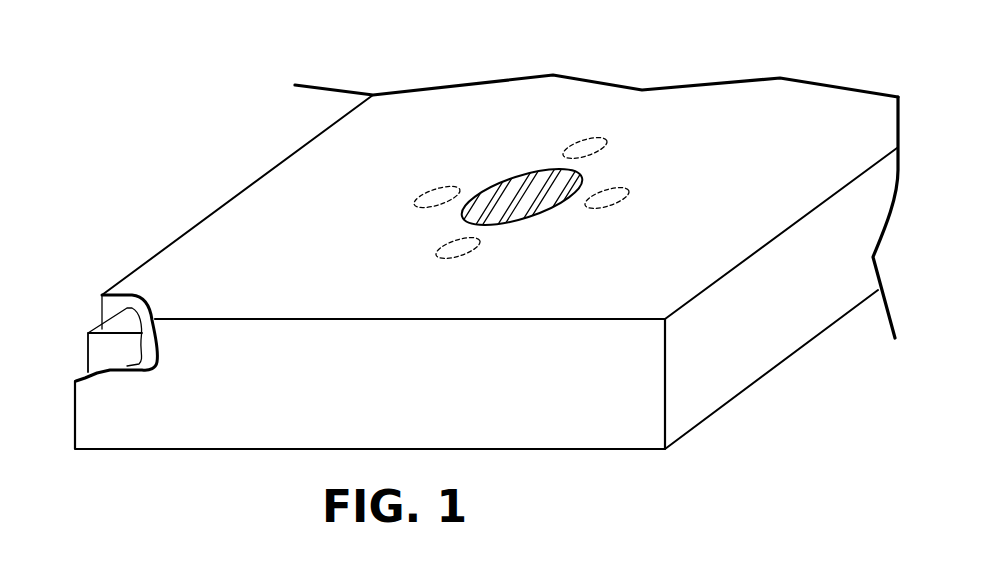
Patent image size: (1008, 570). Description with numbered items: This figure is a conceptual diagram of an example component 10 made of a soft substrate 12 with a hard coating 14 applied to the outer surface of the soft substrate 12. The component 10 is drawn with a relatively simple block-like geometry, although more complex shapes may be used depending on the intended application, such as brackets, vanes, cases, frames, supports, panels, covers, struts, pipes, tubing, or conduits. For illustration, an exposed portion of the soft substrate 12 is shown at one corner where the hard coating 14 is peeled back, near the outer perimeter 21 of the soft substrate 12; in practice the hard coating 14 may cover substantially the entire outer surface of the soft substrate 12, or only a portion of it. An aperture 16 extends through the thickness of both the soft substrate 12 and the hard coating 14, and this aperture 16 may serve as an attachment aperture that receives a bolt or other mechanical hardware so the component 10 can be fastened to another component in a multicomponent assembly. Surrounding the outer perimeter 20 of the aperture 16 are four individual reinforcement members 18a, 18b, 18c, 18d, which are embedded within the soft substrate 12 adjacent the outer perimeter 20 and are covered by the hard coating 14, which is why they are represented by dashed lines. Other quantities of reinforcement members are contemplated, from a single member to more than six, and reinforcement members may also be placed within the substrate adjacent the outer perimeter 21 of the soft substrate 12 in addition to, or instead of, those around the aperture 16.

The component 10 is at (229, 97).
The soft substrate 12 is at (115, 328).
The hard coating 14 is at (233, 268).
The aperture 16 is at (527, 188).
The reinforcement member 18a is at (588, 138).
The reinforcement member 18b is at (623, 187).
The reinforcement member 18c is at (460, 253).
The reinforcement member 18d is at (443, 187).
The outer perimeter of aperture 20 is at (558, 205).
The outer perimeter of soft substrate 21 is at (85, 350).